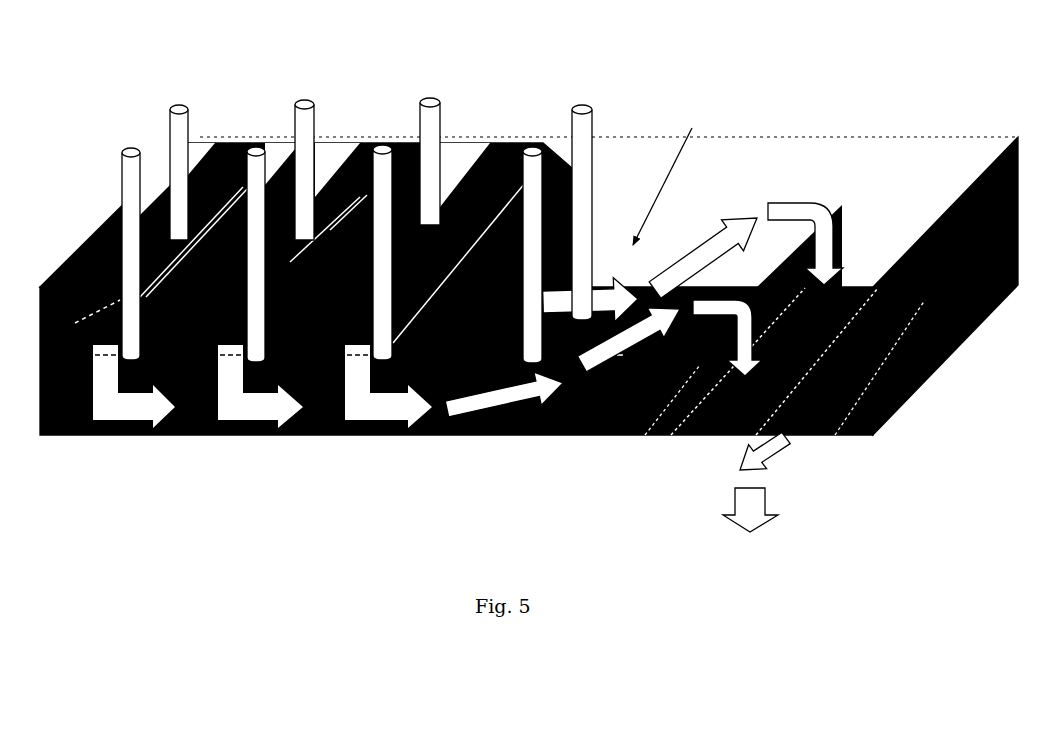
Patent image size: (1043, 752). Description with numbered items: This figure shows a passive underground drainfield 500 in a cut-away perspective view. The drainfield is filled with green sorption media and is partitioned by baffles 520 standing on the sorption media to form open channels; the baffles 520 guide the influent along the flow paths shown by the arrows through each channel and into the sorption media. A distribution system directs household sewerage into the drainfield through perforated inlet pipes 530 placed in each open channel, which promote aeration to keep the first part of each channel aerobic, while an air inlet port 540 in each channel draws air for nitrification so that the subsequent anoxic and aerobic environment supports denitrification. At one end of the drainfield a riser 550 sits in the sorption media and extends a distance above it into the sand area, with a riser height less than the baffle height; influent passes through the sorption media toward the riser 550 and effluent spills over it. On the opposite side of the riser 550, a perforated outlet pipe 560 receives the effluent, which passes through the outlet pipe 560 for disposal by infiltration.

The passive underground drainfield 500 is at (823, 85).
The baffles 520 is at (338, 433).
The perforated inlet pipes 530 is at (217, 150).
The air inlet port 540 is at (591, 98).
The riser 550 is at (645, 435).
The perforated outlet pipe 560 is at (850, 427).